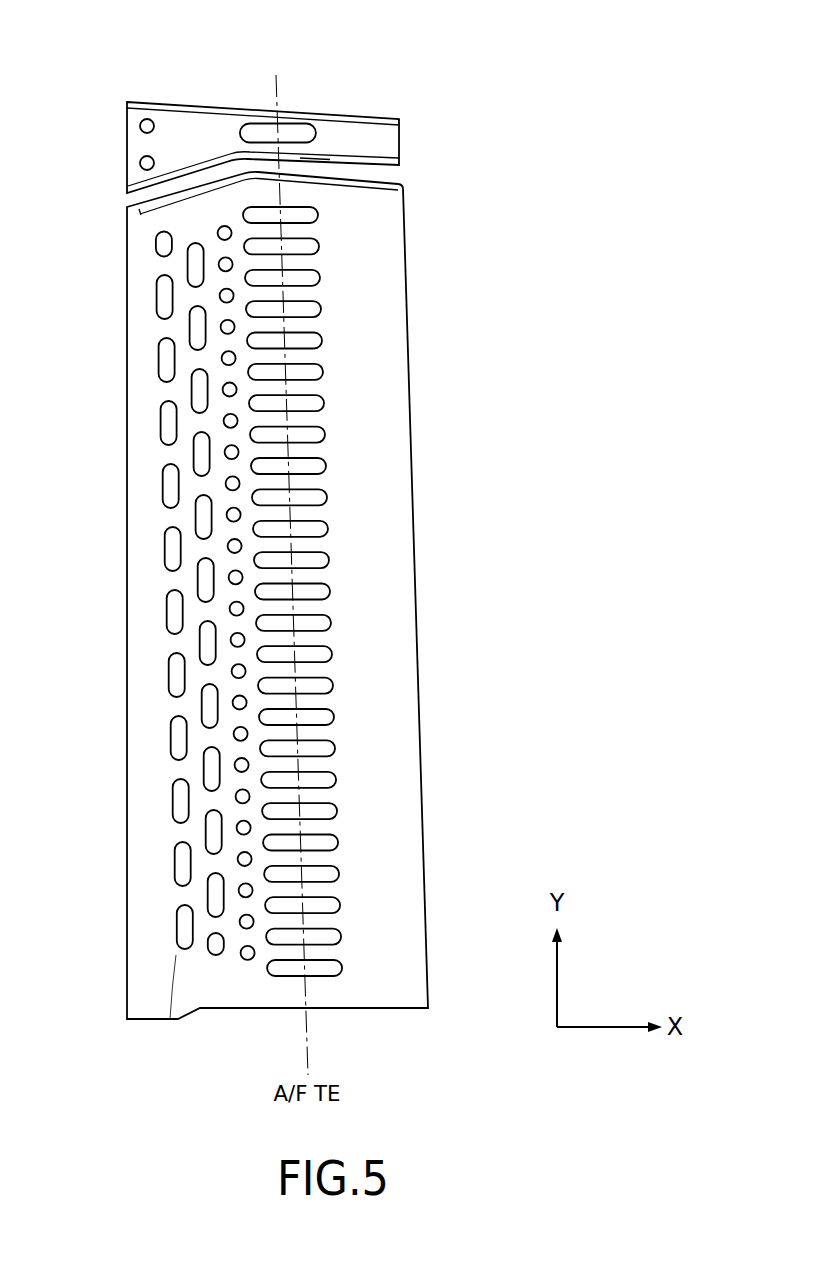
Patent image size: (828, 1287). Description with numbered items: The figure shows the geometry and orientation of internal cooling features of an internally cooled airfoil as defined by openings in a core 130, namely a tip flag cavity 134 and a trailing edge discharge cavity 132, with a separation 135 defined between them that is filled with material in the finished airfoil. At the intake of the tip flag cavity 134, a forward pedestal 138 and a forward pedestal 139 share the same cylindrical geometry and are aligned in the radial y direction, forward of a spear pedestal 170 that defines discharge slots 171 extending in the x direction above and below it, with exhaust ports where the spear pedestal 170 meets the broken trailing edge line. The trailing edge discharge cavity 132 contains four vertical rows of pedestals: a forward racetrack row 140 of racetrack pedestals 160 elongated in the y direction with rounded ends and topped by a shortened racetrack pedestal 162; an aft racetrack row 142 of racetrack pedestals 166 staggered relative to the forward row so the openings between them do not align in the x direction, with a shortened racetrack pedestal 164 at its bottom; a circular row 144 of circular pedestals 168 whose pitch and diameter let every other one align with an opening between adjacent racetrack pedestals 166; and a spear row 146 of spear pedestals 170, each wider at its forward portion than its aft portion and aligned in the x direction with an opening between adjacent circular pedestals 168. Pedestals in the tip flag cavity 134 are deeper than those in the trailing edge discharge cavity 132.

The core 130 is at (426, 62).
The trailing edge discharge cavity 132 is at (398, 214).
The tip flag cavity 134 is at (396, 134).
The separation 135 is at (326, 167).
The forward pedestal 138 is at (146, 119).
The forward pedestal 139 is at (140, 158).
The forward racetrack row 140 is at (187, 998).
The aft racetrack row 142 is at (216, 981).
The circular row 144 is at (246, 981).
The spear row 146 is at (335, 996).
The racetrack pedestal 160 is at (176, 928).
The shortened racetrack pedestal 162 is at (155, 243).
The shortened racetrack pedestal 164 is at (208, 950).
The racetrack pedestal 166 is at (204, 832).
The circular pedestal 168 is at (234, 766).
The spear pedestal 170 is at (303, 127).
The discharge slot 171 is at (255, 147).